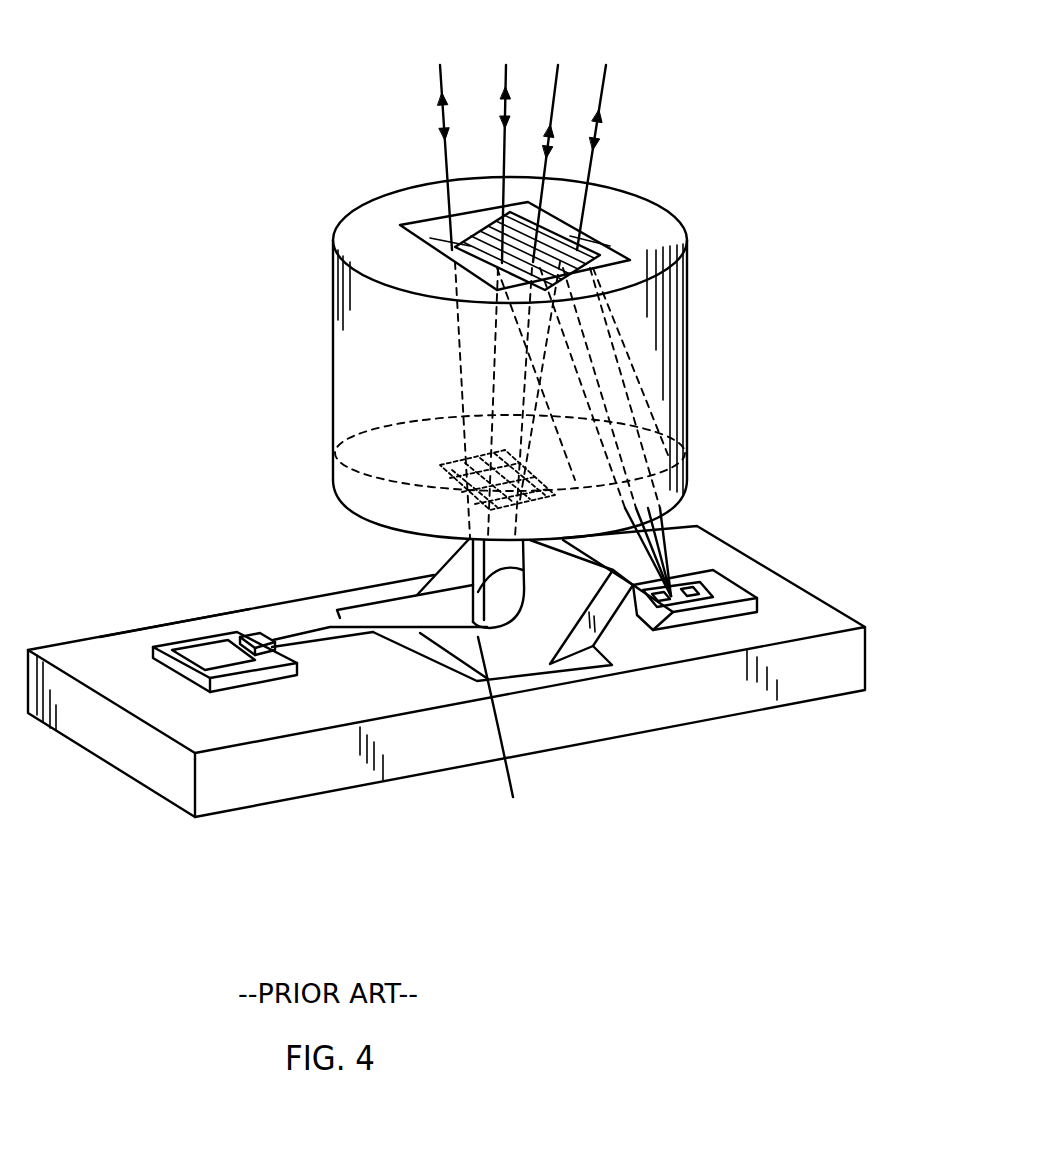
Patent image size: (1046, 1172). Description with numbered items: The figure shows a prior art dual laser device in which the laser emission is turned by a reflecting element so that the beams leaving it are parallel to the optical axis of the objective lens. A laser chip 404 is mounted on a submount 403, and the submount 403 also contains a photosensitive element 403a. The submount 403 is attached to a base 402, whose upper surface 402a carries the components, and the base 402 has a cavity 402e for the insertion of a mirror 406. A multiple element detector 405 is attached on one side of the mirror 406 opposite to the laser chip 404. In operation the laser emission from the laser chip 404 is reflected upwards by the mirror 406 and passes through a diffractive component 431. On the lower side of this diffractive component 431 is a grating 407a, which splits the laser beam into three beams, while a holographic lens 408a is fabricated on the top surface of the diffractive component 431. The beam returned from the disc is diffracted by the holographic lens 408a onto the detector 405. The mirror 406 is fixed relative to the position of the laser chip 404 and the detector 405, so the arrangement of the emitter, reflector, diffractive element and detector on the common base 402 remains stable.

The base 402 is at (425, 745).
The top surface of substrate 402a is at (135, 648).
The cavity 402e is at (509, 740).
The submount 403 is at (257, 683).
The photosensitive element 403a is at (215, 662).
The laser chip 404 is at (257, 636).
The multiple element detector 405 is at (725, 588).
The mirror 406 is at (538, 635).
The grating 407a is at (355, 465).
The holographic lens 408a is at (610, 250).
The diffractive component 431 is at (657, 380).